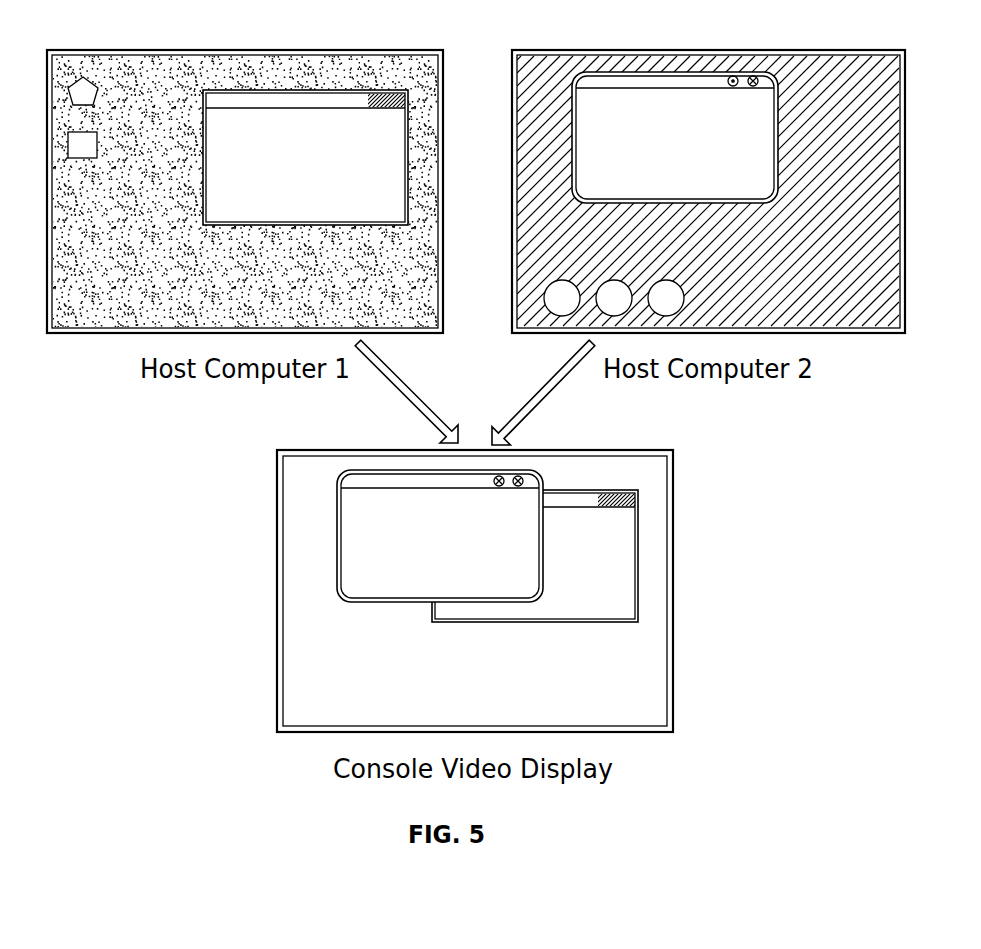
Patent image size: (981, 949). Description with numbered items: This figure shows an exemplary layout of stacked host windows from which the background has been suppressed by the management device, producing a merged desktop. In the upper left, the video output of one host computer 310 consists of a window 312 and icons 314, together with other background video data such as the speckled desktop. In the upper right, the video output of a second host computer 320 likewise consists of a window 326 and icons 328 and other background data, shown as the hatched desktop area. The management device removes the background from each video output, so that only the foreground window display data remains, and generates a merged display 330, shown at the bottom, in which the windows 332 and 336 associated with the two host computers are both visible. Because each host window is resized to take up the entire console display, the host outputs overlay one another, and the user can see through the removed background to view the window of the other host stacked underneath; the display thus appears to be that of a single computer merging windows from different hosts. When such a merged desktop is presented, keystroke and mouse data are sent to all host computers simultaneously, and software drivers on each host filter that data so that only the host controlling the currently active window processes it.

The host computer 310 is at (382, 50).
The window 312 is at (253, 90).
The icons 314 is at (92, 130).
The second host computer 320 is at (845, 50).
The window 326 is at (632, 72).
The icons 328 is at (666, 316).
The merged display 330 is at (610, 450).
The window 332 is at (640, 529).
The window 336 is at (385, 470).